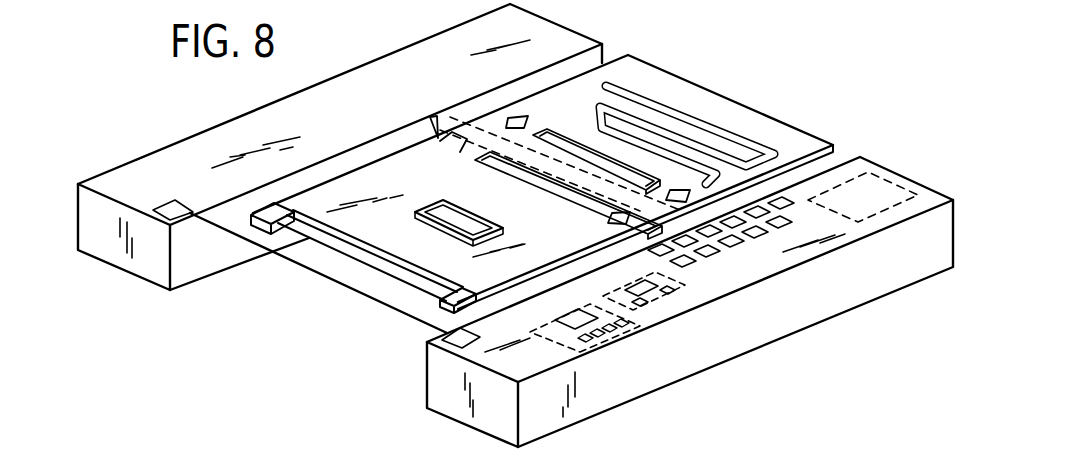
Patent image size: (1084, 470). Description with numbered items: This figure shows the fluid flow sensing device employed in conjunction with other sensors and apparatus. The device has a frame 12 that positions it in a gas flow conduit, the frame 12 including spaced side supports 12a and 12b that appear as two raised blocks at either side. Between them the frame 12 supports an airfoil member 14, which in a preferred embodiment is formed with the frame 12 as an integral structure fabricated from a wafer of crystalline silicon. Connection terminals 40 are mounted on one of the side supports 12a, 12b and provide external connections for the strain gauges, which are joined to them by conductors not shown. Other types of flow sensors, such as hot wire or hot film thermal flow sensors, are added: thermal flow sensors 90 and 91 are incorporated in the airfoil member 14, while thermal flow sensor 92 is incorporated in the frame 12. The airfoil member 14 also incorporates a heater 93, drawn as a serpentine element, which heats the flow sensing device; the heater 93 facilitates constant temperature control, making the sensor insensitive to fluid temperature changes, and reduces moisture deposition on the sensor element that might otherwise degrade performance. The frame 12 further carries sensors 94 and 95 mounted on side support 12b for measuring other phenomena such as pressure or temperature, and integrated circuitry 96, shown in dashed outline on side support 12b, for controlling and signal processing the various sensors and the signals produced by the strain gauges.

The frame 12 is at (691, 383).
The side support 12a is at (170, 164).
The side support 12b is at (828, 222).
The airfoil member 14 is at (467, 268).
The connection terminals 40 is at (735, 250).
The thermal flow sensor 90 is at (354, 258).
The thermal flow sensor 91 is at (444, 206).
The thermal flow sensor 92 is at (312, 272).
The heater 93 is at (693, 113).
The sensor 94 is at (583, 340).
The sensor 95 is at (657, 295).
The integrated circuitry 96 is at (880, 187).